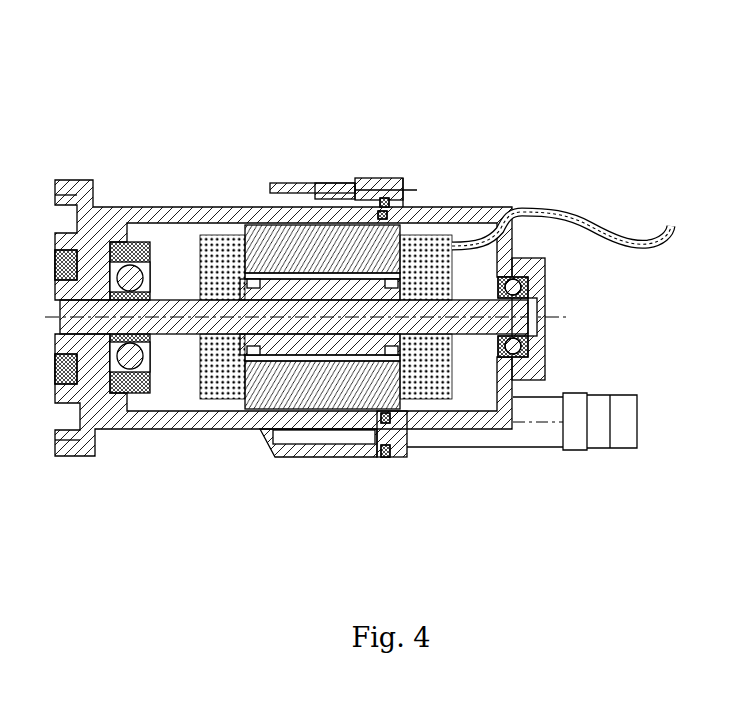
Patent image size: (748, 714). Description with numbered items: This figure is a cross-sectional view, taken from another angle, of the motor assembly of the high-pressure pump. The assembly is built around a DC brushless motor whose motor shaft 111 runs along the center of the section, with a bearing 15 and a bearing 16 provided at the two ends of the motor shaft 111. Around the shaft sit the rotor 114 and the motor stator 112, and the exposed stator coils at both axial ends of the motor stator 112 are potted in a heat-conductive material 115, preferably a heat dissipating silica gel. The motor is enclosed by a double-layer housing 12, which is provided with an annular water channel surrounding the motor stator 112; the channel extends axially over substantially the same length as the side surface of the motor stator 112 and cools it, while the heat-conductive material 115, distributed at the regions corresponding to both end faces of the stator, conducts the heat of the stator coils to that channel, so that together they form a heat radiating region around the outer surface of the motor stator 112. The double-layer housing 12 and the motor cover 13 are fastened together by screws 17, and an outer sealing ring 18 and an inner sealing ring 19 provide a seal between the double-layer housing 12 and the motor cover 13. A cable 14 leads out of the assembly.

The motor shaft 111 is at (193, 412).
The motor stator 112 is at (248, 220).
The rotor 114 is at (338, 207).
The heat-conductive material 115 is at (462, 430).
The double-layer housing 12 is at (274, 455).
The motor cover 13 is at (405, 440).
The cable 14 is at (621, 237).
The bearing 15 is at (149, 262).
The bearing 16 is at (519, 283).
The screws 17 is at (408, 185).
The outer sealing ring 18 is at (383, 445).
The inner sealing ring 19 is at (362, 458).